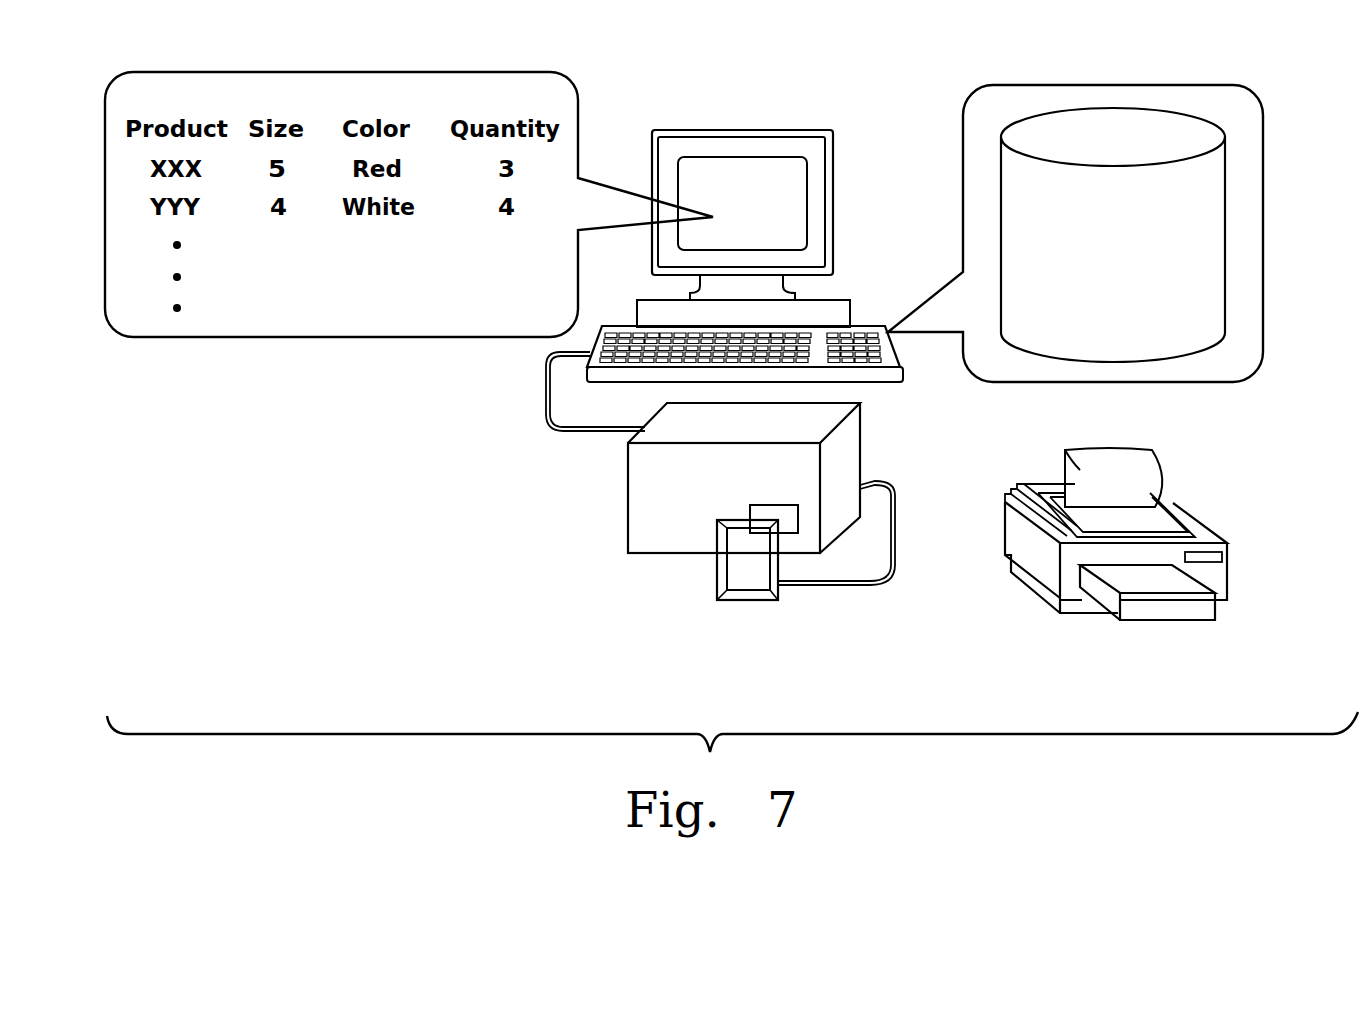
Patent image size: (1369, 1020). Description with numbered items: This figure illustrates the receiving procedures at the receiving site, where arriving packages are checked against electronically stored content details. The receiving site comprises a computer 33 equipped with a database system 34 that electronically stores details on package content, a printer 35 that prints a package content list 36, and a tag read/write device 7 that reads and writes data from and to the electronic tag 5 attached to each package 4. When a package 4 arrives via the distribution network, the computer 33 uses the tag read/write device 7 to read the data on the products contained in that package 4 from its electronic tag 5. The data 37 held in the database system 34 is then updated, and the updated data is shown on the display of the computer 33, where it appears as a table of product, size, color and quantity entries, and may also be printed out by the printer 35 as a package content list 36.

The package 4 is at (628, 473).
The electronic tag 5 is at (798, 522).
The tag read/write device 7 is at (755, 602).
The computer 33 is at (737, 128).
The database system 34 is at (1101, 233).
The printer 35 is at (1149, 524).
The package content list 36 is at (1142, 477).
The data 37 is at (1230, 277).